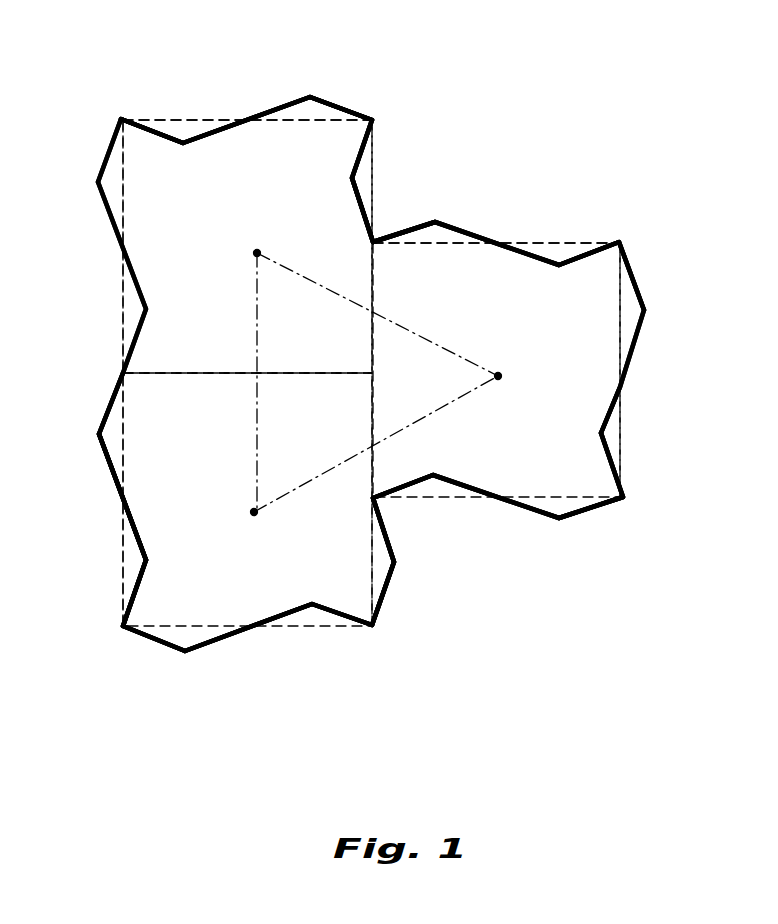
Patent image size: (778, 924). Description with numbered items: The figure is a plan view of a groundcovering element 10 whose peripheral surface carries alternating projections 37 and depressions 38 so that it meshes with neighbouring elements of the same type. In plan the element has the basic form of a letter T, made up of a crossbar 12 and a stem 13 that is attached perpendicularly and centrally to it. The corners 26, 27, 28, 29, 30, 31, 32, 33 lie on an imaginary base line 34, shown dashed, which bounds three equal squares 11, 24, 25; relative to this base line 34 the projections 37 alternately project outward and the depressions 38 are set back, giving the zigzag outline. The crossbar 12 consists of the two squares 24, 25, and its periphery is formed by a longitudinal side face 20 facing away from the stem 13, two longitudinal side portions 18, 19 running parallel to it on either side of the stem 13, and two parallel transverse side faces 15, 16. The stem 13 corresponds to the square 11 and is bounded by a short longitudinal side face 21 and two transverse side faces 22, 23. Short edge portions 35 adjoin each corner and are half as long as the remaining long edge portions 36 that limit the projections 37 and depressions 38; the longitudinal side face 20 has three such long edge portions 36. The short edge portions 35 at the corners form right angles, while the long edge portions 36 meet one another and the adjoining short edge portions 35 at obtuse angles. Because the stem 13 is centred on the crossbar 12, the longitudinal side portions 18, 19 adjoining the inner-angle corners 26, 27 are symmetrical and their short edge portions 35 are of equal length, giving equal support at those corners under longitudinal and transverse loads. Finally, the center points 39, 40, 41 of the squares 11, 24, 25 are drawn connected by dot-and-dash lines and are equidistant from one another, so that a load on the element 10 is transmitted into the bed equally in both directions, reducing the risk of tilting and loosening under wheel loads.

The groundcovering element 10 is at (413, 170).
The square of the stem 11 is at (504, 433).
The crossbar 12 is at (288, 160).
The stem 13 is at (562, 234).
The transverse side face 15 is at (275, 625).
The transverse side face 16 is at (213, 122).
The longitudinal side portion 18 is at (396, 548).
The longitudinal side portion 19 is at (362, 168).
The longitudinal side face 20 is at (112, 460).
The longitudinal side face of stem 21 is at (623, 385).
The transverse side face of stem 22 is at (547, 520).
The transverse side face of stem 23 is at (503, 239).
The square of the crossbar 24 is at (191, 508).
The square of the crossbar 25 is at (194, 285).
The inner-angle corner 26 is at (381, 503).
The inner-angle corner 27 is at (377, 237).
The corner 28 is at (373, 630).
The corner 29 is at (627, 501).
The corner 30 is at (623, 238).
The corner 31 is at (376, 116).
The corner 32 is at (119, 117).
The corner 33 is at (120, 629).
The base line 34 is at (174, 118).
The short edge portion 35 is at (163, 137).
The long edge portion 36 is at (238, 128).
The projection 37 is at (110, 423).
The depression 38 is at (133, 558).
The center point 39 is at (254, 515).
The center point 40 is at (257, 252).
The center point 41 is at (499, 374).